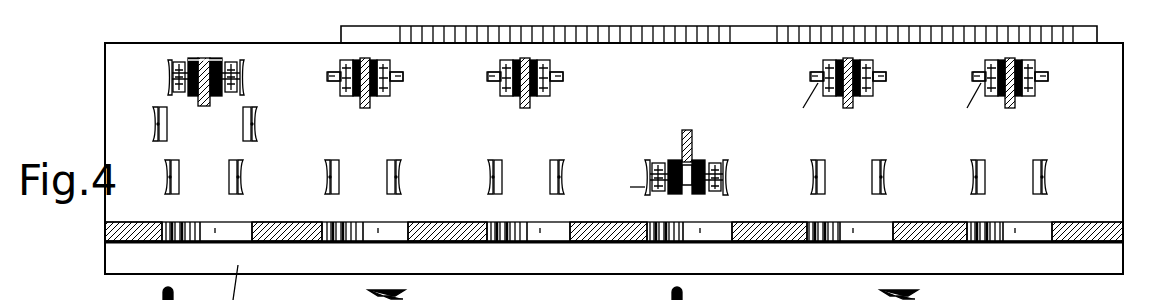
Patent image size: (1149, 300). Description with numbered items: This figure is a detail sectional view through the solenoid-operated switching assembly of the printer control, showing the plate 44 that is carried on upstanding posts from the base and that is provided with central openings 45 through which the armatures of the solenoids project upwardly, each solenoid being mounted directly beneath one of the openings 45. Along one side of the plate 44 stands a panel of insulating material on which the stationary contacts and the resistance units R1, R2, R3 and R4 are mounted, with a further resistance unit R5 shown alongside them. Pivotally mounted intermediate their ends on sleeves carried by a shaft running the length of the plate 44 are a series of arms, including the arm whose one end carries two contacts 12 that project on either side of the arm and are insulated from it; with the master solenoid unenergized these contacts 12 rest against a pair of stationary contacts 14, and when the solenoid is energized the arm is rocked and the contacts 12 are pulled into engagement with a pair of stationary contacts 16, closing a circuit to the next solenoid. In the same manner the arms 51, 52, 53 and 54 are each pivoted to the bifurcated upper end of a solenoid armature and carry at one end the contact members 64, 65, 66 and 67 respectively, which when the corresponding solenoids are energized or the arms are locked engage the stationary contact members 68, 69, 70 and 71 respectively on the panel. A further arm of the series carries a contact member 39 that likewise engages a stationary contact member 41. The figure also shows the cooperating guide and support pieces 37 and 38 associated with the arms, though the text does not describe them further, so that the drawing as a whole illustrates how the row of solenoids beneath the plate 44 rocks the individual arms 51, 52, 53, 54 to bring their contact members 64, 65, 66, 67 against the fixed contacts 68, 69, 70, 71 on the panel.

The contacts 12 is at (222, 95).
The stationary contacts 14 is at (166, 67).
The stationary contacts 16 is at (167, 170).
The guide rollers 37 is at (156, 121).
The bearings 38 is at (680, 152).
The contact member 39 is at (707, 153).
The stationary contact member 41 is at (652, 186).
The plate 44 is at (600, 245).
The central openings 45 is at (218, 234).
The arm 51 is at (364, 102).
The arm 52 is at (523, 106).
The arm 53 is at (848, 106).
The arm 54 is at (1006, 106).
The contact member 64 is at (333, 82).
The contact member 65 is at (497, 82).
The contact member 66 is at (879, 83).
The contact member 67 is at (1039, 83).
The stationary contact member 68 is at (390, 170).
The stationary contact member 69 is at (552, 170).
The stationary contact member 70 is at (873, 173).
The stationary contact member 71 is at (1035, 175).
The resistance unit R1 is at (471, 33).
The resistance unit R2 is at (652, 33).
The resistance unit R3 is at (818, 32).
The resistance unit R4 is at (961, 33).
The rack section R5 is at (874, 294).